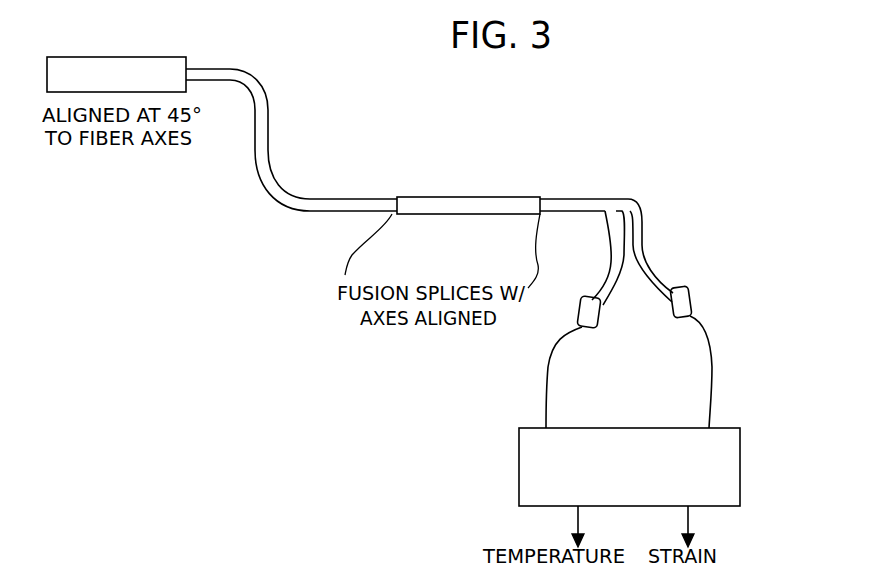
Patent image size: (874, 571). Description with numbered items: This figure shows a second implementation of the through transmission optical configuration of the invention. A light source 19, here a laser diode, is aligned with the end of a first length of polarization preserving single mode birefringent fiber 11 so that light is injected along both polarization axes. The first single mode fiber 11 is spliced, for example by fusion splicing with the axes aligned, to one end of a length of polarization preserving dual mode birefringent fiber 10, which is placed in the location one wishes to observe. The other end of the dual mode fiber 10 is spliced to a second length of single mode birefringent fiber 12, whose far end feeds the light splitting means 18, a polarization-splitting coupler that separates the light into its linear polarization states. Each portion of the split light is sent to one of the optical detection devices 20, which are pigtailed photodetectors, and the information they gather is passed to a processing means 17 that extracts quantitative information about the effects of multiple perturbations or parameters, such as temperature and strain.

The light source 19 is at (102, 57).
The first length of polarization preserving single mode birefringent fiber 11 is at (268, 174).
The dual mode birefringent fiber 10 is at (468, 214).
The second length of polarization preserving single mode birefringent fiber 12 is at (589, 198).
The light splitting means 18 is at (610, 195).
The optical detection devices 20 is at (580, 320).
The processing means 17 is at (519, 444).